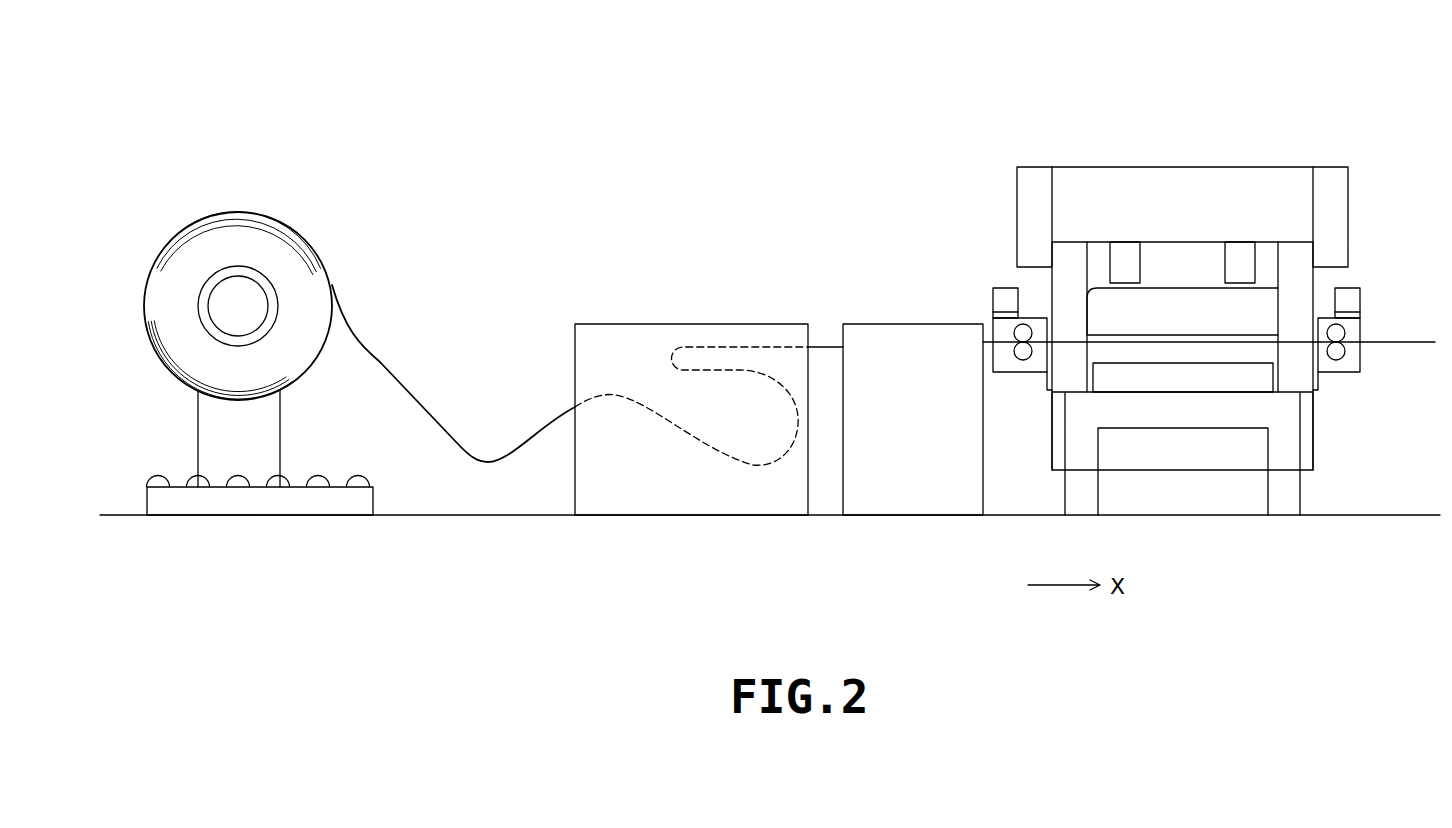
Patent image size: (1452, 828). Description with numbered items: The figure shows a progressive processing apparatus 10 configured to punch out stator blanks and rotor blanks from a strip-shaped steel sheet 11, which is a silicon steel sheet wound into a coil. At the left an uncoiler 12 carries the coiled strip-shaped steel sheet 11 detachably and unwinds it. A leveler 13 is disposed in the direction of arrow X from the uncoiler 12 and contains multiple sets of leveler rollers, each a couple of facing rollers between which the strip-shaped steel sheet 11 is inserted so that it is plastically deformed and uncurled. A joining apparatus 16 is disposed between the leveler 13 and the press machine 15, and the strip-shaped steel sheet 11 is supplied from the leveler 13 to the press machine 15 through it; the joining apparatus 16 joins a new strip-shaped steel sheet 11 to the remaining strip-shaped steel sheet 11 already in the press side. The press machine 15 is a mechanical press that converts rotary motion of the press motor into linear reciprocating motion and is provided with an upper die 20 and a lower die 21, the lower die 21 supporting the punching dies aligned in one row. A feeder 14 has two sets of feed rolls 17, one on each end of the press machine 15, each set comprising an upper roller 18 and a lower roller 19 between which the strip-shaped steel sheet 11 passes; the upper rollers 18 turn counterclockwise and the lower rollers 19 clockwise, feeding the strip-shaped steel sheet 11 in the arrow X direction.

The progressive processing apparatus 10 is at (1020, 158).
The strip-shaped steel sheet 11 is at (371, 354).
The uncoiler 12 is at (187, 429).
The leveler 13 is at (686, 310).
The feeder 14 is at (1380, 318).
The press machine 15 is at (1218, 156).
The joining apparatus 16 is at (879, 310).
The feed rolls 17 is at (945, 250).
The upper roller 18 is at (1027, 325).
The lower roller 19 is at (1015, 355).
The upper die 20 is at (1268, 292).
The lower die 21 is at (1258, 388).